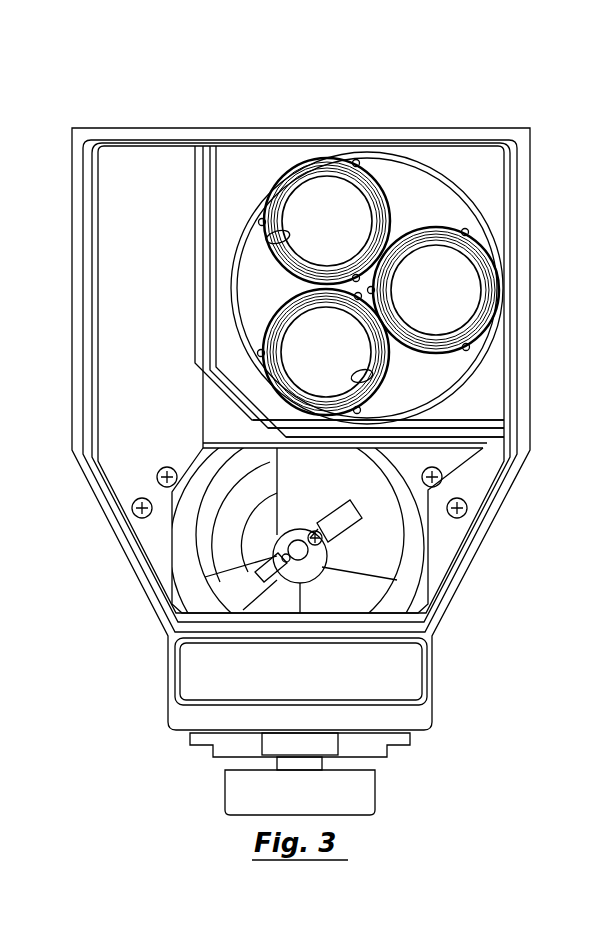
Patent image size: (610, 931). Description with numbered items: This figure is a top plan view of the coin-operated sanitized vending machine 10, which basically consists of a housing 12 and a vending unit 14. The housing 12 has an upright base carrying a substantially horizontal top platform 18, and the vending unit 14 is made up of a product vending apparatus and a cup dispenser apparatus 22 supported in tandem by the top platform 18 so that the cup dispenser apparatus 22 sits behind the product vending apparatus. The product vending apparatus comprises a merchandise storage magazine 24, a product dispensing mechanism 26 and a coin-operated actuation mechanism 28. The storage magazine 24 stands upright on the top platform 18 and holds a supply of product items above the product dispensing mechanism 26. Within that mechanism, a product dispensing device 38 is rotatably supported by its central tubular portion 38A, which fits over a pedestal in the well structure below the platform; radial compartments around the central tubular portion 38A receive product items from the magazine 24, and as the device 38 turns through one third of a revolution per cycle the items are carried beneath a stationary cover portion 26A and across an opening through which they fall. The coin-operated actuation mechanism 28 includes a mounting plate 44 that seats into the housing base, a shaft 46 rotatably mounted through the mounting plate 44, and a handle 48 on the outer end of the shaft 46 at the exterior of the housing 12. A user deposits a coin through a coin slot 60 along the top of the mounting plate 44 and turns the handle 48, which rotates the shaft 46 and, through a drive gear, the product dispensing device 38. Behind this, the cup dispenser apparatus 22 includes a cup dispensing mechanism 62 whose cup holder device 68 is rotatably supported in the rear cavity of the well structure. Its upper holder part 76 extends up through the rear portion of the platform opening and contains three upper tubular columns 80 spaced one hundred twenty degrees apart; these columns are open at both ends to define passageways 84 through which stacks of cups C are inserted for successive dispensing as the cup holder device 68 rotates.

The sanitized vending machine 10 is at (335, 106).
The housing 12 is at (118, 574).
The vending unit 14 is at (148, 124).
The top platform 18 is at (130, 400).
The cup dispenser apparatus 22 is at (235, 138).
The merchandise storage magazine 24 is at (110, 505).
The product dispensing mechanism 26 is at (428, 548).
The stationary cover portion 26A is at (378, 540).
The coin-operated actuation mechanism 28 is at (318, 774).
The product dispensing device 38 is at (376, 592).
The central tubular portion 38A is at (300, 528).
The mounting plate 44 is at (400, 738).
The shaft 46 is at (318, 762).
The handle 48 is at (340, 794).
The coin slot 60 is at (292, 742).
The cup dispensing mechanism 62 is at (470, 198).
The cup holder device 68 is at (402, 184).
The upper holder part 76 is at (452, 366).
The upper tubular columns 80 is at (447, 223).
The passageways 84 is at (283, 240).
The cups C is at (290, 186).